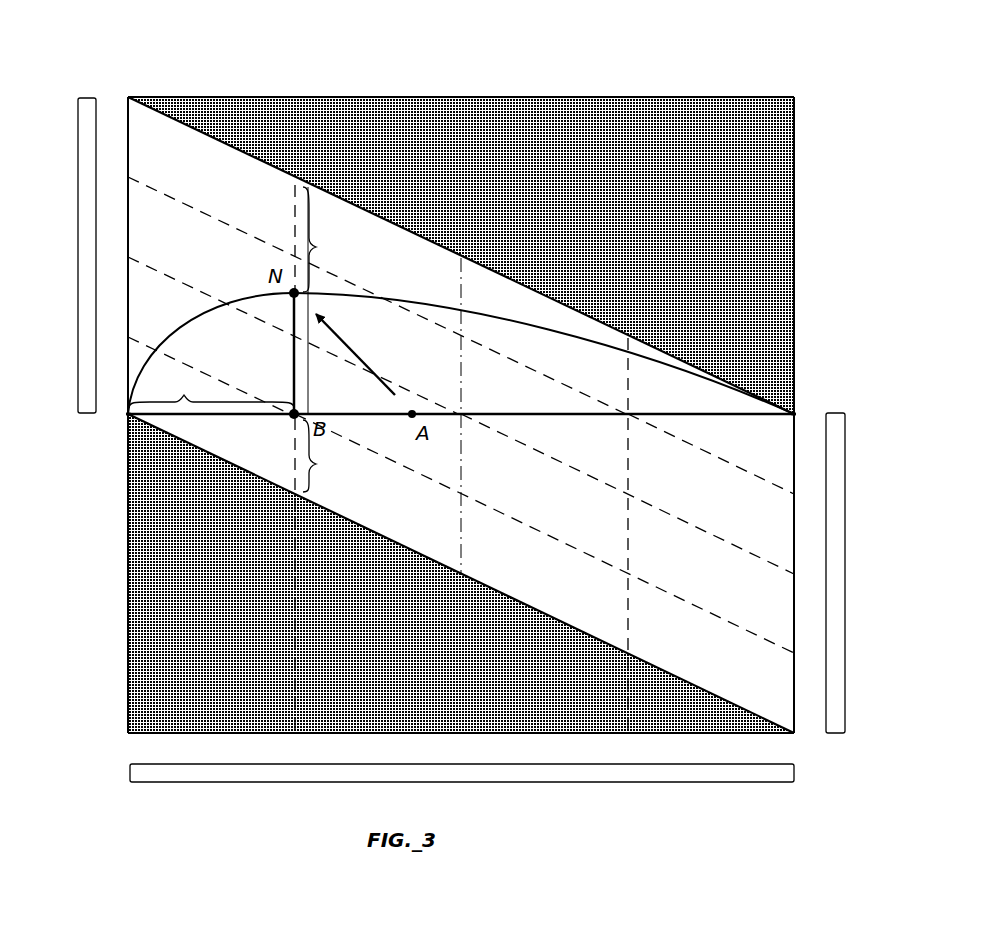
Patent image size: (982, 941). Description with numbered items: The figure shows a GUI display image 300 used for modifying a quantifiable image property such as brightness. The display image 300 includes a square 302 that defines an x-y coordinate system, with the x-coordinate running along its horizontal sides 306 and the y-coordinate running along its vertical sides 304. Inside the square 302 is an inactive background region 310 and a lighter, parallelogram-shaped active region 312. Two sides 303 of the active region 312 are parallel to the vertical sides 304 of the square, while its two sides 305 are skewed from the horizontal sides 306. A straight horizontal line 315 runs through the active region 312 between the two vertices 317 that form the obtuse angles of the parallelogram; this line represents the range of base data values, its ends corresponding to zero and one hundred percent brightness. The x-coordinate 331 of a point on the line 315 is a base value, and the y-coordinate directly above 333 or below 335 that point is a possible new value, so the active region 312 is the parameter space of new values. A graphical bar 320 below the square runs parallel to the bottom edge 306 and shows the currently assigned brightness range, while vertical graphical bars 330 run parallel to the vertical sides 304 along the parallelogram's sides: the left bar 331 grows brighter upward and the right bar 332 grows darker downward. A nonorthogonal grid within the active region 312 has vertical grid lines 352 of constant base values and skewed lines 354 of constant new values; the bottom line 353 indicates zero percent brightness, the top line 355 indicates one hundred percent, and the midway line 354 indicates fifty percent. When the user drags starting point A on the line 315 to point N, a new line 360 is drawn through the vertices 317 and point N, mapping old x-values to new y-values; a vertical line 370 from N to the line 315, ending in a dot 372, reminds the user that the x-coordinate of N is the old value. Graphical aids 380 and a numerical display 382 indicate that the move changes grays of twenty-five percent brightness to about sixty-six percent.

The GUI display image 300 is at (247, 40).
The square 302 is at (767, 132).
The sides of parallelogram active region 303 is at (796, 735).
The vertical sides of square 304 is at (128, 112).
The skewed sides of parallelogram active region 305 is at (645, 341).
The horizontal sides of square 306 is at (737, 97).
The inactive background region 310 is at (538, 201).
The active region 312 is at (553, 496).
The horizontal line 315 is at (480, 413).
The vertices 317 is at (822, 373).
The graphical bar 320 is at (625, 783).
The vertical graphical bars 330 is at (78, 238).
The graphical bar 331 is at (211, 390).
The graphical bar 332 is at (845, 530).
The y-coordinate above line 333 is at (377, 295).
The y-coordinate below line 335 is at (544, 573).
The vertical grid lines 352 is at (630, 430).
The line 353 is at (657, 668).
The skewed lines 354 is at (682, 521).
The line 355 is at (406, 232).
The new line 360 is at (236, 272).
The vertical line 370 is at (293, 376).
The dot 372 is at (292, 419).
The graphical aids 380 is at (413, 733).
The numerical display 382 is at (128, 640).